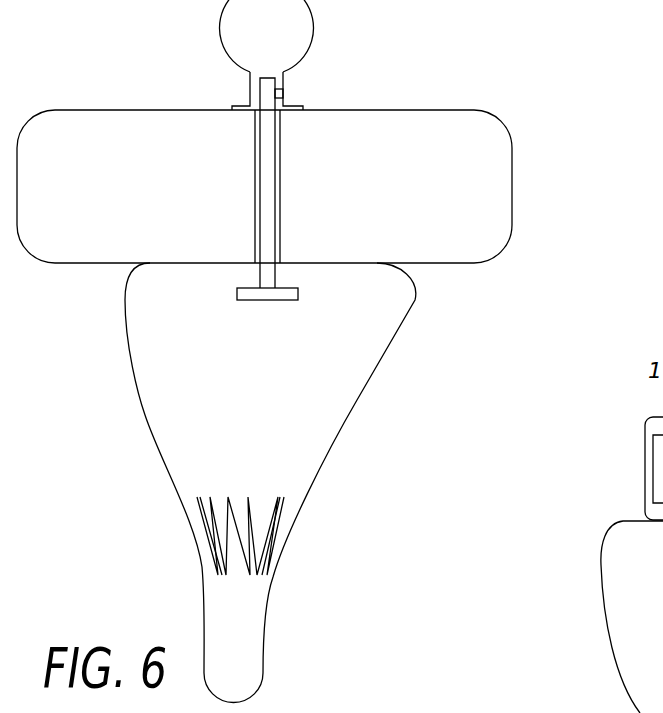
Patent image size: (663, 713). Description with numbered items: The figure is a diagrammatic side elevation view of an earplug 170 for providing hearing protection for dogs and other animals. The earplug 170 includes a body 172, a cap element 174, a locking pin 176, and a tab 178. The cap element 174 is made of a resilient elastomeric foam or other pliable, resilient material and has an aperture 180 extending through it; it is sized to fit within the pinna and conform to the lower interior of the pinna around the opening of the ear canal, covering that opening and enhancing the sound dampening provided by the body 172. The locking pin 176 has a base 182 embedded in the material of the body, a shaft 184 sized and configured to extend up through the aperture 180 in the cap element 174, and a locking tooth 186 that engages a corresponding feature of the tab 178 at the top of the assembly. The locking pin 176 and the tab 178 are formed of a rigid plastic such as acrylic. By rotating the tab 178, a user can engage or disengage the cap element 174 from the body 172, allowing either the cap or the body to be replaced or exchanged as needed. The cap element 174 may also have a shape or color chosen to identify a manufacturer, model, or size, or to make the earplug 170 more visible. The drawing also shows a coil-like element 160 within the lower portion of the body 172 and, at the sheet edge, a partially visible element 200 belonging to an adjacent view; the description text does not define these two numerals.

The coil spring 160 is at (276, 536).
The earplug 170 is at (561, 191).
The body 172 is at (405, 327).
The cap element 174 is at (436, 110).
The locking pin 176 is at (288, 163).
The tab 178 is at (218, 30).
The aperture 180 is at (253, 168).
The base 182 is at (248, 302).
The shaft 184 is at (277, 190).
The locking tooth 186 is at (284, 92).
The component 200 is at (648, 462).